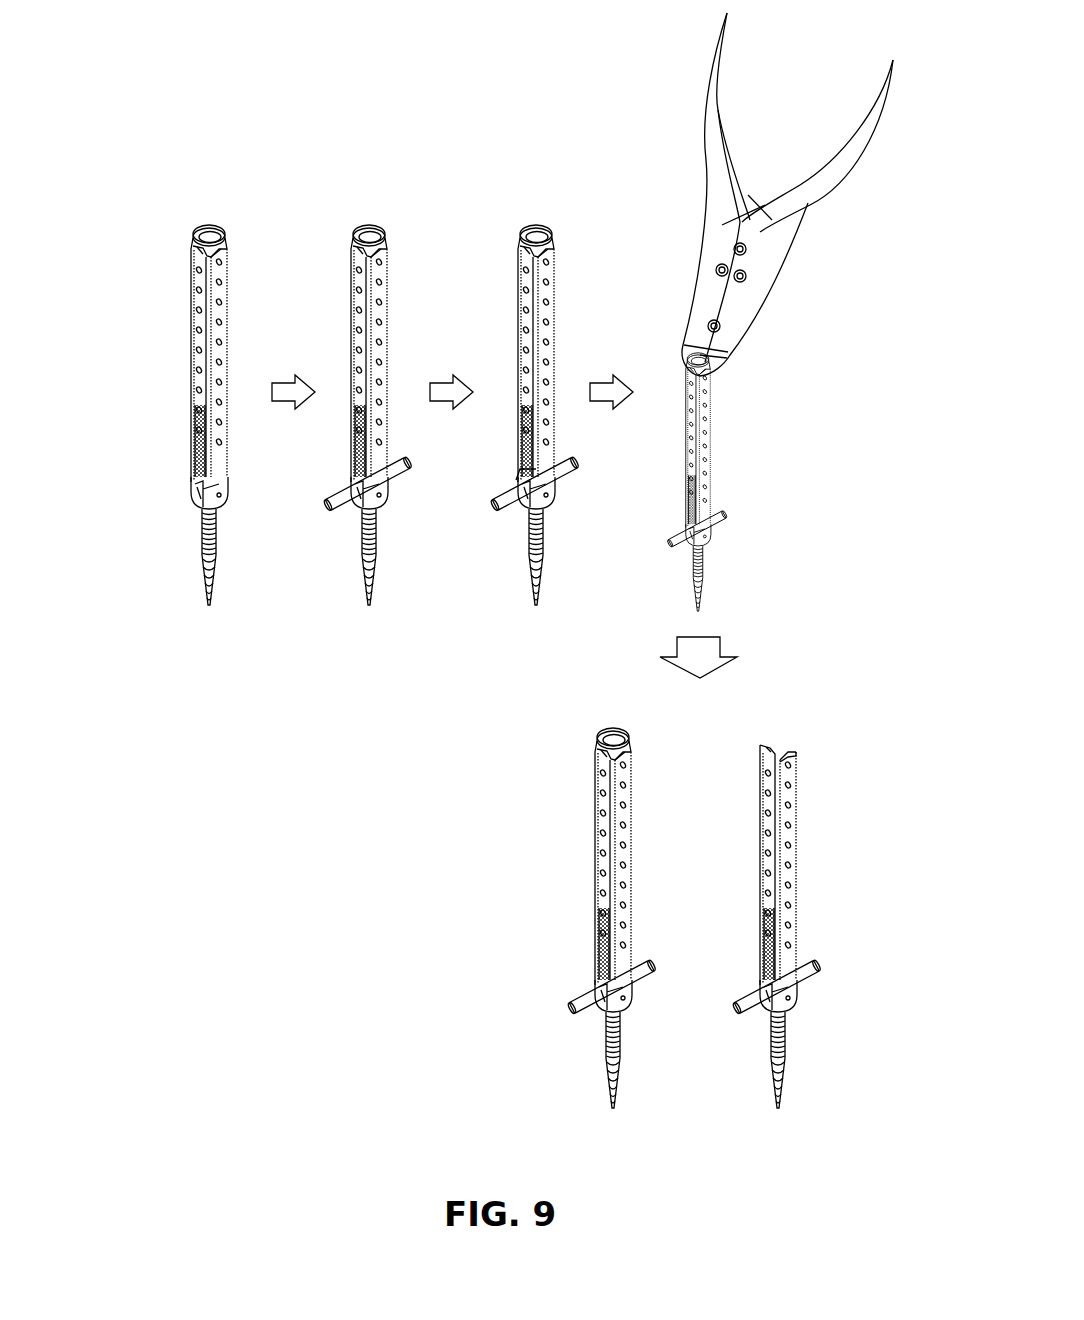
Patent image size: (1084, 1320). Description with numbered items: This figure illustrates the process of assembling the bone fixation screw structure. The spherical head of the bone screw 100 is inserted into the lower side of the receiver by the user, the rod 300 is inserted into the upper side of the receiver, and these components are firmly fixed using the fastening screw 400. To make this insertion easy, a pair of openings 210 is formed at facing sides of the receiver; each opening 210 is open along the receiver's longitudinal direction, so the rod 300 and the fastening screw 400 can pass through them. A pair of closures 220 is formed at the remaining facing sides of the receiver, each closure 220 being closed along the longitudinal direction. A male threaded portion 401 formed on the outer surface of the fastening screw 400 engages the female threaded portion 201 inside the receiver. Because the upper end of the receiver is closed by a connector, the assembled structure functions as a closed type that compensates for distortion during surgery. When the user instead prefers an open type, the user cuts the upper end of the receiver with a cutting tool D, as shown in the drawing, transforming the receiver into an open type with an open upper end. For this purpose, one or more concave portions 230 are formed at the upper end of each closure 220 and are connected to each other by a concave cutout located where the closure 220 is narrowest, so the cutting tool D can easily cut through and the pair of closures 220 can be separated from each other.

The bone screw 100 is at (209, 541).
The female threaded portion 201 is at (527, 441).
The opening 210 is at (200, 441).
The closure 220 is at (198, 365).
The concave portion 230 is at (207, 251).
The rod 300 is at (368, 483).
The fastening screw 400 is at (535, 483).
The male threaded portion 401 is at (526, 474).
The cutting tool D is at (748, 298).